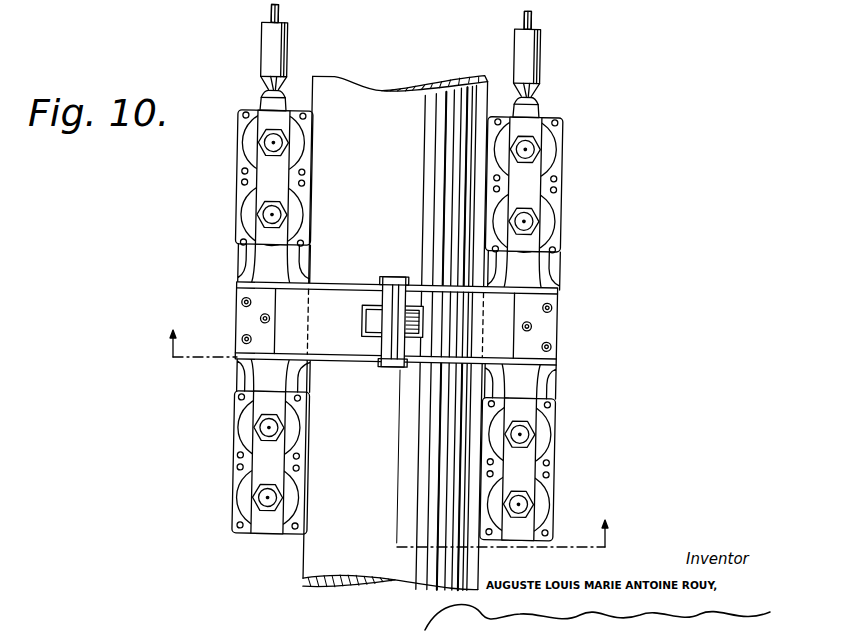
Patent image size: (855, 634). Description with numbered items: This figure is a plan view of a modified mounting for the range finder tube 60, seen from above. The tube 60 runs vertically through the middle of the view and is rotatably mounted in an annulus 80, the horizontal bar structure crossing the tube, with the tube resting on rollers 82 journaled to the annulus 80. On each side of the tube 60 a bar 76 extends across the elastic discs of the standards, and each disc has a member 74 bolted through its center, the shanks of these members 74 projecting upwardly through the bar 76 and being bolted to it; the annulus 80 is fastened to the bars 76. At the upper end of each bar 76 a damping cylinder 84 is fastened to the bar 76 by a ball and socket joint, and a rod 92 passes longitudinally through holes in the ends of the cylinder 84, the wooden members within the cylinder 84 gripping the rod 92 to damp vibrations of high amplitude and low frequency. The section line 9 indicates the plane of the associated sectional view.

The section line 9- 9 is at (385, 449).
The range finder tube 60 is at (398, 90).
The member 74 is at (250, 144).
The bar 76 is at (265, 181).
The annulus 80 is at (367, 342).
The rollers 82 is at (370, 327).
The cylinder 84 is at (271, 59).
The rod 92 is at (271, 18).